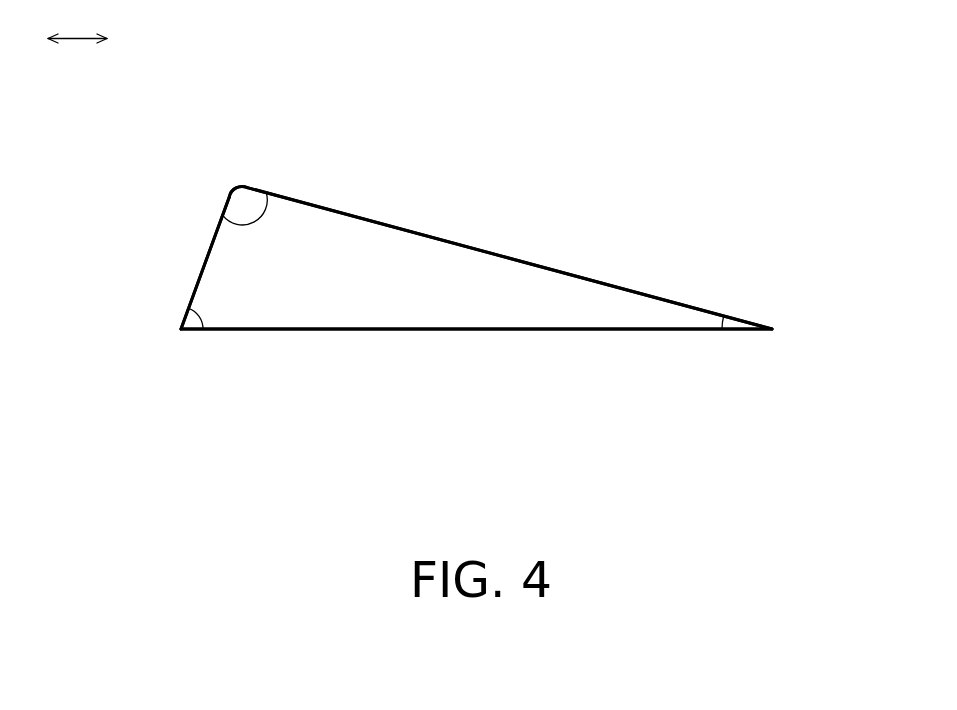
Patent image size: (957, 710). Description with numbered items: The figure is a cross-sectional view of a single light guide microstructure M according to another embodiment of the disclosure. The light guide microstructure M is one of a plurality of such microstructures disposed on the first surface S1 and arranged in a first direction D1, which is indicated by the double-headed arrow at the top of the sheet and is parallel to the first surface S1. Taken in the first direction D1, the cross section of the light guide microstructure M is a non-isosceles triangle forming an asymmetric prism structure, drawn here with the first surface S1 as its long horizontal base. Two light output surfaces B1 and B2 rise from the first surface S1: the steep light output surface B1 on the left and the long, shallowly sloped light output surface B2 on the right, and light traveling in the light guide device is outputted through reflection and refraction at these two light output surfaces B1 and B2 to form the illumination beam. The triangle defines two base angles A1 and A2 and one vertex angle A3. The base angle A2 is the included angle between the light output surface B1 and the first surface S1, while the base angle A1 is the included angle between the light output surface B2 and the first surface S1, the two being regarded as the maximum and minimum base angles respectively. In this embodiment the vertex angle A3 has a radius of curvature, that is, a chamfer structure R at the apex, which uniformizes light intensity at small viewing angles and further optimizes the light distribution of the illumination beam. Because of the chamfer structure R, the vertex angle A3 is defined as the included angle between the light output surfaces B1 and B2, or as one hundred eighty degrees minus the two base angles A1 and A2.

The light guide microstructure M is at (499, 165).
The first direction D1 is at (77, 64).
The light output surface B1 is at (212, 245).
The light output surface B2 is at (401, 228).
The first surface S1 is at (318, 319).
The chamfer structure R is at (229, 197).
The base angle A1 is at (722, 319).
The base angle A2 is at (190, 310).
The vertex angle A3 is at (264, 204).